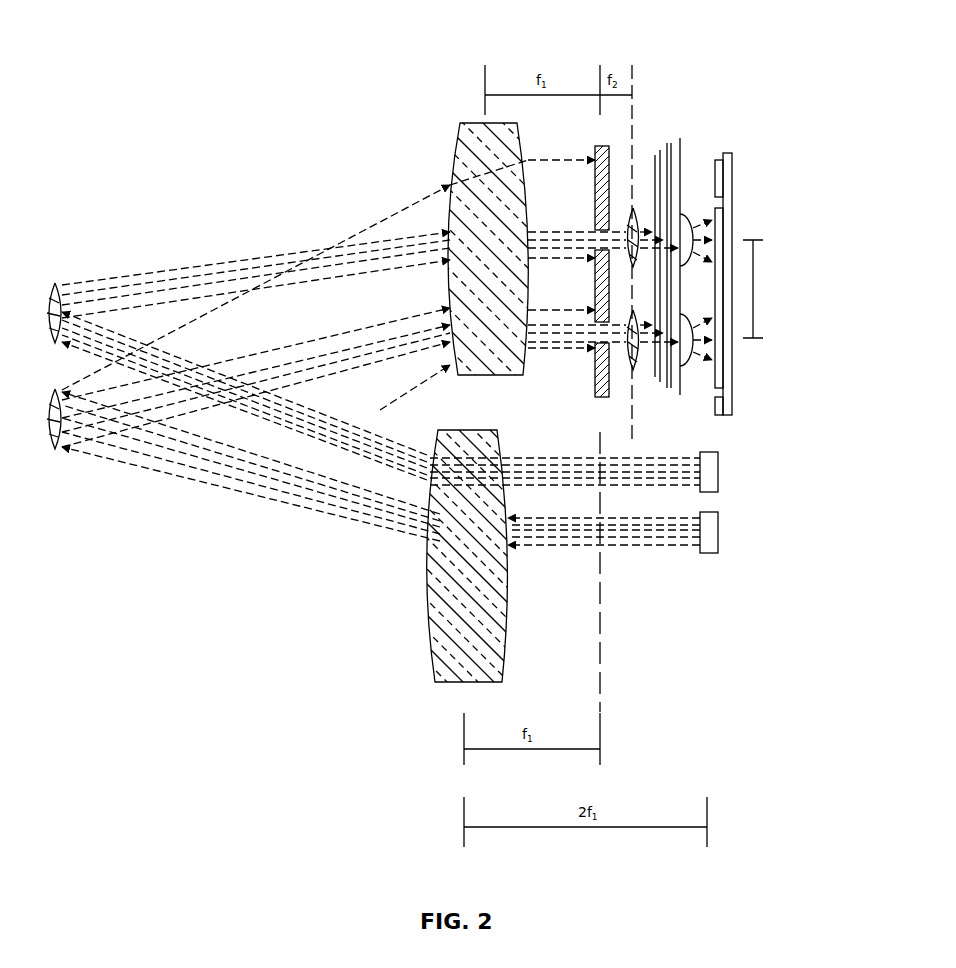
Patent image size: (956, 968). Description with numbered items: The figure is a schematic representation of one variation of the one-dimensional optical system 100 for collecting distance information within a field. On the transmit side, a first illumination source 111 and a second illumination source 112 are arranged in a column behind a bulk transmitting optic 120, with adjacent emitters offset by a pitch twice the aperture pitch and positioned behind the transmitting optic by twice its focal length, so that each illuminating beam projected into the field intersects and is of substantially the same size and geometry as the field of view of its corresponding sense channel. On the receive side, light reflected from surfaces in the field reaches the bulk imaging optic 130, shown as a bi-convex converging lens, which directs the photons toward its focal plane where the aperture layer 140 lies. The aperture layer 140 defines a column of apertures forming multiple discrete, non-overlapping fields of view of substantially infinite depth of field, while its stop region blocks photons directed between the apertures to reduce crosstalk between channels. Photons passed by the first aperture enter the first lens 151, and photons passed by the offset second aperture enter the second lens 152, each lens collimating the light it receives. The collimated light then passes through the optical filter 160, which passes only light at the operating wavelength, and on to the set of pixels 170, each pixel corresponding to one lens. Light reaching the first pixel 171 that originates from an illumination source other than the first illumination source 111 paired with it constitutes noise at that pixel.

The one-dimensional optical system 100 is at (722, 52).
The first illumination source 111 is at (720, 470).
The second illumination source 112 is at (720, 535).
The bulk transmitting optic 120 is at (430, 645).
The bulk imaging optic 130 is at (447, 148).
The aperture layer 140 is at (595, 398).
The first lens 151 is at (633, 206).
The second lens 152 is at (633, 372).
The optical filter 160 is at (673, 151).
The set of pixels 170 is at (734, 170).
The first pixel 171 is at (779, 330).